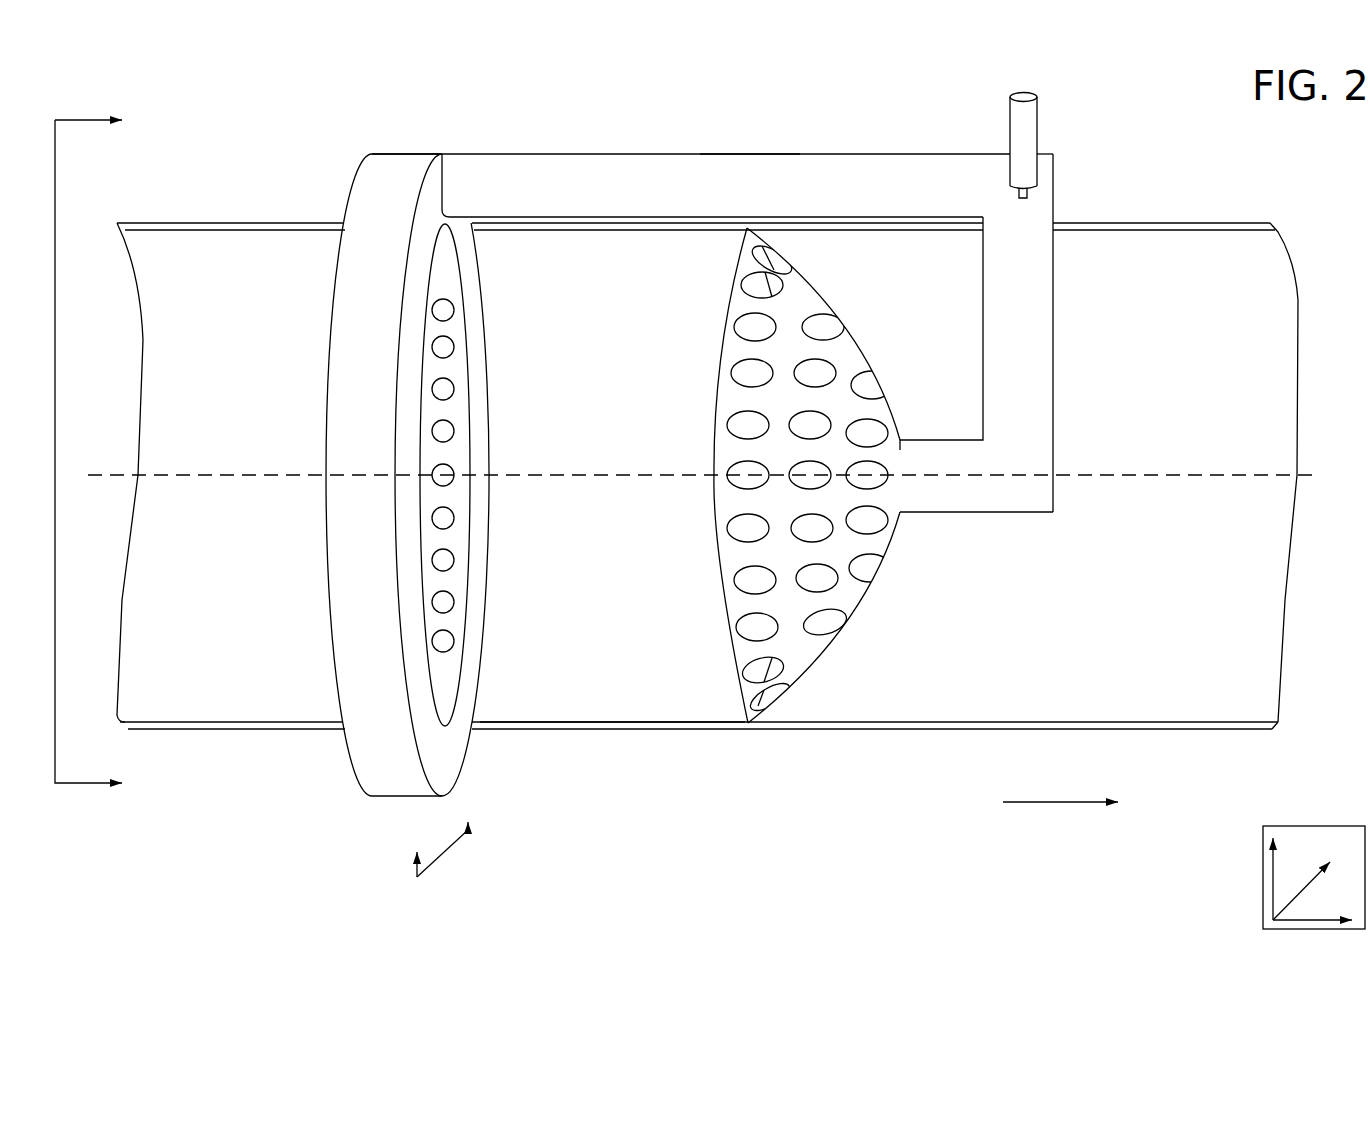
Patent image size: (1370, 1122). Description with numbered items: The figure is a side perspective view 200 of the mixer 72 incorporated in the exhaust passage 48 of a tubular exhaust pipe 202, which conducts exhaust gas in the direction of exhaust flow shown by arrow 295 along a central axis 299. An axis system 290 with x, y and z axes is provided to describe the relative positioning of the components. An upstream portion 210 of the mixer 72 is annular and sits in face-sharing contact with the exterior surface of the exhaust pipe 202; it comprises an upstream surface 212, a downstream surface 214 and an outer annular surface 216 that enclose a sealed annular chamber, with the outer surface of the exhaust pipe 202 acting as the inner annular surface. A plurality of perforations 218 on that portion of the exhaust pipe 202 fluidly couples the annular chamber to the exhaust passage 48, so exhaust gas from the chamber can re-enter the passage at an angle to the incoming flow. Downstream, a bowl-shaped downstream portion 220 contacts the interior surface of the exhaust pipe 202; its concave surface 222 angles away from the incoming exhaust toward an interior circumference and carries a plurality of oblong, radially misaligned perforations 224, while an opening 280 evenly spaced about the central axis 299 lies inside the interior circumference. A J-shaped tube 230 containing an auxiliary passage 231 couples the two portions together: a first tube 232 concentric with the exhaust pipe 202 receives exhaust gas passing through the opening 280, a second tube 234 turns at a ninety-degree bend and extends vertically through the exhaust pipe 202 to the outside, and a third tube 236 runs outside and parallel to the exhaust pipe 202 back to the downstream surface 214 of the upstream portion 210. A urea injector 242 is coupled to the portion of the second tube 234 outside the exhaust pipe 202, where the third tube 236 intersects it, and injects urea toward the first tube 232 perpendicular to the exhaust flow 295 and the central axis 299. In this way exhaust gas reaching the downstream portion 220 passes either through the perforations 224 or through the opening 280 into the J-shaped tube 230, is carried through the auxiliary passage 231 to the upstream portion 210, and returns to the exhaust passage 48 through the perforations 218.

The side perspective view 200 is at (1258, 138).
The exhaust pipe 202 is at (1163, 222).
The upstream portion 210 is at (268, 184).
The upstream surface 212 is at (278, 410).
The downstream surface 214 is at (470, 272).
The outer annular surface 216 is at (400, 170).
The perforations 218 is at (462, 560).
The downstream portion 220 is at (651, 333).
The concave surface 222 is at (822, 297).
The perforations 224 is at (850, 362).
The J-shaped tube 230 is at (1123, 165).
The auxiliary passage 231 is at (969, 328).
The first tube 232 is at (940, 514).
The second tube 234 is at (1053, 373).
The third tube 236 is at (583, 153).
The urea injector 242 is at (1037, 120).
The opening 280 is at (908, 462).
The central axis 299 is at (1196, 475).
The direction of exhaust flow 295 is at (1030, 802).
The axis system 290 is at (1330, 826).
The mixer 72 is at (803, 98).
The exhaust passage 48 is at (612, 613).